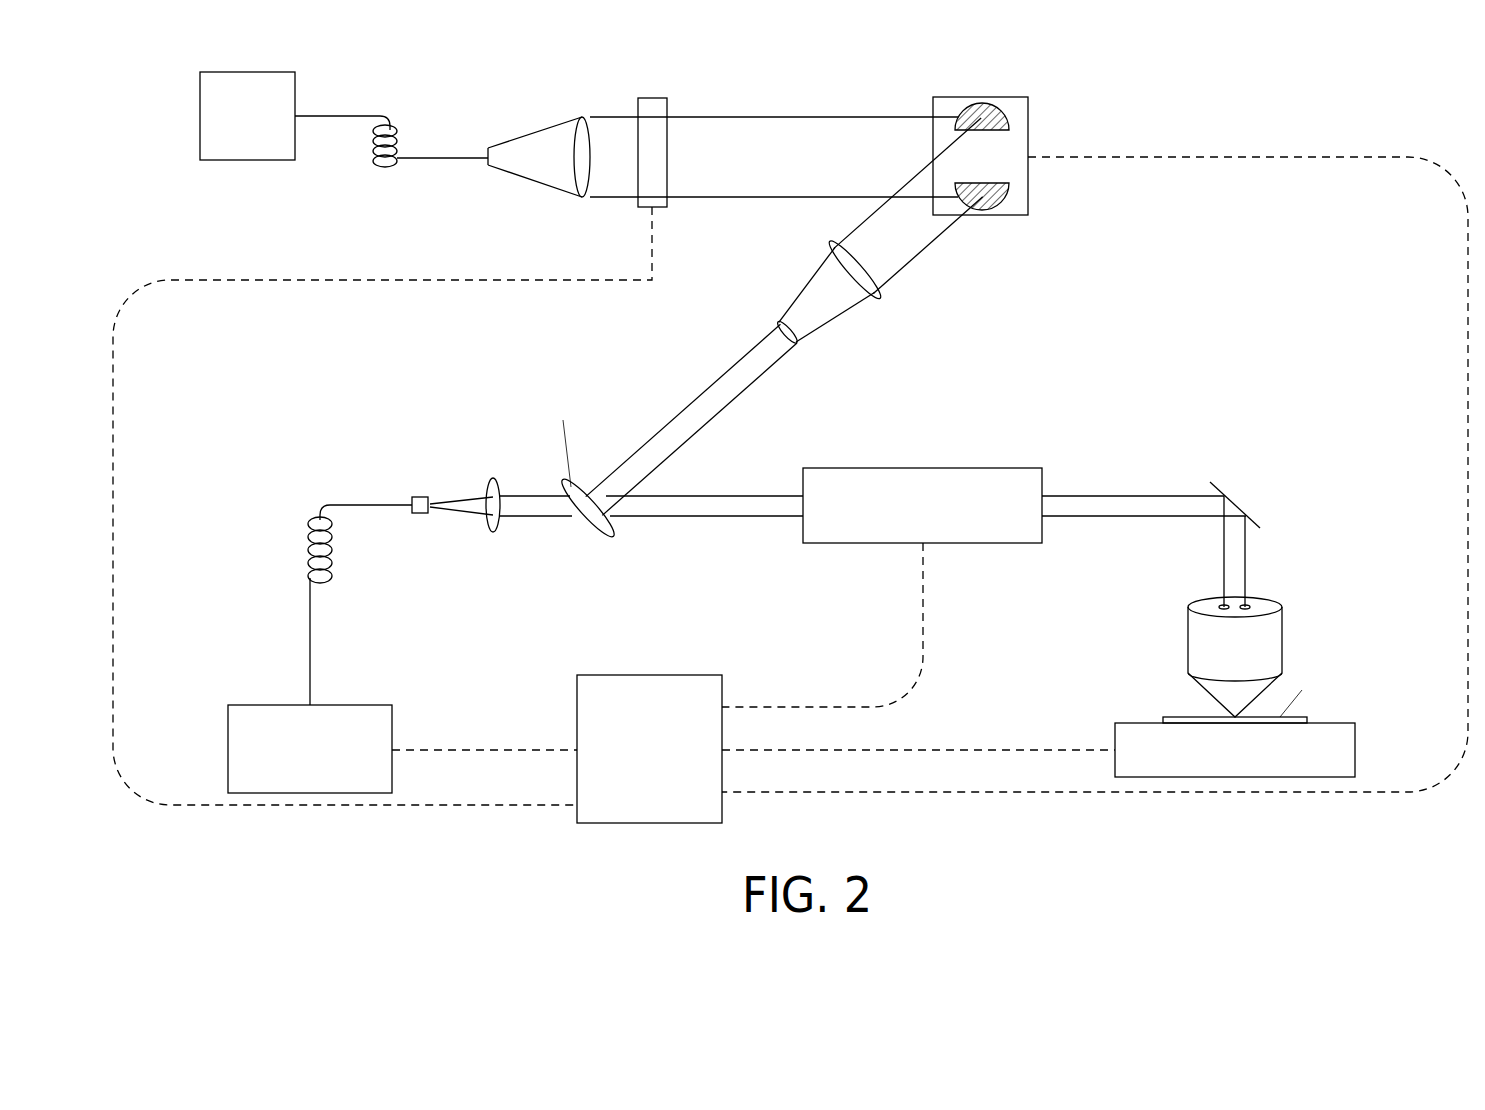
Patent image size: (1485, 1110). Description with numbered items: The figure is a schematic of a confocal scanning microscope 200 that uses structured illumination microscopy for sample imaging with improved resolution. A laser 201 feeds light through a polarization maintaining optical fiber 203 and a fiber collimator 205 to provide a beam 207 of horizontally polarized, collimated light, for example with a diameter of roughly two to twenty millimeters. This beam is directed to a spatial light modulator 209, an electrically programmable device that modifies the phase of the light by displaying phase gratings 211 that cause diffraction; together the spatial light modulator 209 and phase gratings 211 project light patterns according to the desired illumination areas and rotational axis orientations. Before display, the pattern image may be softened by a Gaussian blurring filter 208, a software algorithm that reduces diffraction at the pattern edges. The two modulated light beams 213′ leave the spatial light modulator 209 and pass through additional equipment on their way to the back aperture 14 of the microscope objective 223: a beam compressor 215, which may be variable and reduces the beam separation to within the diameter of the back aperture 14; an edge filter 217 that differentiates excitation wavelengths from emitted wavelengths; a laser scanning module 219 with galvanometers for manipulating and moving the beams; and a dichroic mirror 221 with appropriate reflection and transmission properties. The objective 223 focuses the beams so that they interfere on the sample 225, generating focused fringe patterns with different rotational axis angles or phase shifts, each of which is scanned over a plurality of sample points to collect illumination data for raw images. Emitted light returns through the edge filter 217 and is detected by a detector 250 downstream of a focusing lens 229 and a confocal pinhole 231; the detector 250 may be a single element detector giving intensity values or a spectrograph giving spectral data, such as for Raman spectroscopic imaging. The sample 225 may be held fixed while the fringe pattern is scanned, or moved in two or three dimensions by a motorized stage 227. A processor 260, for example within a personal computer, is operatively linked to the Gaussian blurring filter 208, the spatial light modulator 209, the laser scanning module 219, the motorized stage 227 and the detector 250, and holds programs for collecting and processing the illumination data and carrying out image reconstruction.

The confocal scanning microscope 200 is at (187, 63).
The laser 201 is at (252, 72).
The polarization maintaining optical fiber 203 is at (363, 115).
The fiber collimator 205 is at (529, 142).
The beam 207 is at (785, 116).
The Gaussian blurring filter 208 is at (653, 98).
The spatial light modulator 209 is at (940, 97).
The phase gratings 211 is at (998, 116).
The modulated light beam 213′ is at (866, 228).
The beam compressor 215 is at (800, 293).
The edge filter 217 is at (610, 530).
The laser scanning module 219 is at (1032, 468).
The dichroic mirror 221 is at (1240, 502).
The back aperture 14 is at (1275, 642).
The microscope objective 223 is at (1282, 640).
The sample 225 is at (1173, 717).
The motorized stage 227 is at (1355, 750).
The focusing lens 229 is at (502, 488).
The confocal pinhole 231 is at (410, 510).
The detector 250 is at (380, 705).
The processor 260 is at (710, 675).